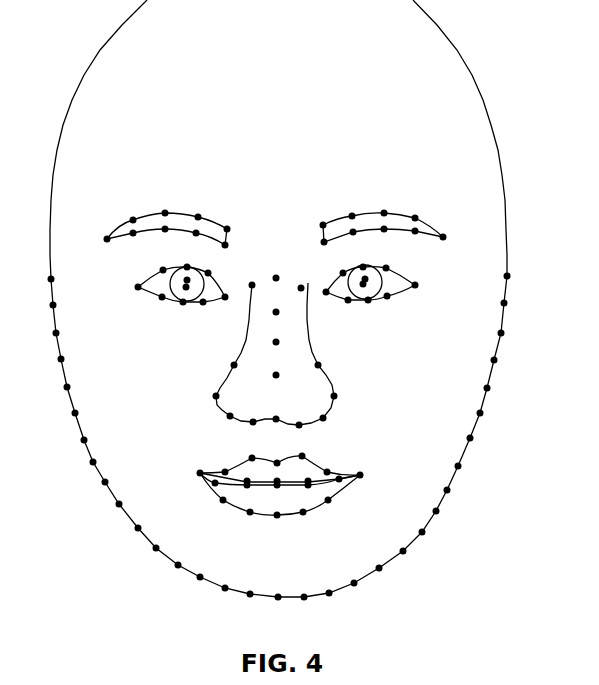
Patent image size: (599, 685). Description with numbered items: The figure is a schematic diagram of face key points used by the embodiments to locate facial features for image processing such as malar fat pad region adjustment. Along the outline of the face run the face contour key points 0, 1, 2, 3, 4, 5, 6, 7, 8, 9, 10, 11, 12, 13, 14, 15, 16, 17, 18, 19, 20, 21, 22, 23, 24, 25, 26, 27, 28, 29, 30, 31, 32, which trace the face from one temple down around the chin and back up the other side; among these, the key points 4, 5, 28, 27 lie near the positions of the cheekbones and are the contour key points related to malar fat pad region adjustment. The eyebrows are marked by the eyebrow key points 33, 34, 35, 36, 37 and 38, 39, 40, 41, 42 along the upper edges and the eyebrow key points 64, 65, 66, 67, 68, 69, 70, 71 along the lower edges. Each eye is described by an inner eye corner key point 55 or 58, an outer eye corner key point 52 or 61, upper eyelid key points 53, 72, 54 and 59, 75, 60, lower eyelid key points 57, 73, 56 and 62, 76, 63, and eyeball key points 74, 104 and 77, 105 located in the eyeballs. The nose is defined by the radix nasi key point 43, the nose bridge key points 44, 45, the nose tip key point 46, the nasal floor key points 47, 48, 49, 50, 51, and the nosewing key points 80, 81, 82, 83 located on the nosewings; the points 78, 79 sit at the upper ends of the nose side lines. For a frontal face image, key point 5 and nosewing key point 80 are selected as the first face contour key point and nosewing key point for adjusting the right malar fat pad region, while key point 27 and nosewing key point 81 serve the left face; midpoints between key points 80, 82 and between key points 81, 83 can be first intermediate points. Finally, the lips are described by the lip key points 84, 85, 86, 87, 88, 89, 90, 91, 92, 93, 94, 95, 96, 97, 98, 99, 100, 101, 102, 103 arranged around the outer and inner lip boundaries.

The face contour key point 0 is at (47, 288).
The face contour key point 1 is at (50, 314).
The face contour key point 2 is at (54, 343).
The face contour key point 3 is at (59, 369).
The face contour key point 4 is at (65, 396).
The face contour key point 5 is at (73, 423).
The face contour key point 6 is at (82, 449).
The face contour key point 7 is at (90, 470).
The face contour key point 8 is at (103, 491).
The face contour key point 9 is at (117, 513).
The face contour key point 10 is at (133, 537).
The face contour key point 11 is at (152, 557).
The face contour key point 12 is at (175, 574).
The face contour key point 13 is at (197, 586).
The face contour key point 14 is at (223, 597).
The face contour key point 15 is at (247, 602).
The face contour key point 16 is at (275, 605).
The face contour key point 17 is at (302, 605).
The face contour key point 18 is at (327, 601).
The face contour key point 19 is at (353, 591).
The face contour key point 20 is at (379, 576).
The face contour key point 21 is at (402, 560).
The face contour key point 22 is at (422, 541).
The face contour key point 23 is at (437, 520).
The face contour key point 24 is at (452, 499).
The face contour key point 25 is at (463, 474).
The face contour key point 26 is at (476, 447).
The face contour key point 27 is at (486, 423).
The face contour key point 28 is at (495, 399).
The face contour key point 29 is at (501, 370).
The face contour key point 30 is at (508, 341).
The face contour key point 31 is at (512, 311).
The face contour key point 32 is at (514, 284).
The eyebrow key point 33 is at (103, 233).
The eyebrow key point 34 is at (133, 212).
The eyebrow key point 35 is at (164, 207).
The eyebrow key point 36 is at (198, 211).
The eyebrow key point 37 is at (226, 222).
The eyebrow key point 38 is at (323, 219).
The eyebrow key point 39 is at (352, 209).
The eyebrow key point 40 is at (385, 206).
The eyebrow key point 41 is at (413, 213).
The eyebrow key point 42 is at (447, 230).
The radix nasi key point 43 is at (276, 286).
The nose bridge key point 44 is at (276, 319).
The nose bridge key point 45 is at (276, 349).
The nose tip key point 46 is at (276, 384).
The nasal floor key point 47 is at (226, 424).
The nasal floor key point 48 is at (252, 430).
The nasal floor key point 49 is at (275, 426).
The nasal floor key point 50 is at (298, 433).
The nasal floor key point 51 is at (326, 426).
The outer eye corner key point 52 is at (142, 295).
The upper eyelid key point 53 is at (163, 263).
The upper eyelid key point 54 is at (213, 267).
The inner eye corner key point 55 is at (225, 305).
The lower eyelid key point 56 is at (203, 309).
The lower eyelid key point 57 is at (160, 305).
The inner eye corner key point 58 is at (325, 301).
The upper eyelid key point 59 is at (340, 267).
The upper eyelid key point 60 is at (387, 262).
The outer eye corner key point 61 is at (415, 293).
The lower eyelid key point 62 is at (387, 304).
The lower eyelid key point 63 is at (347, 309).
The eyebrow key point 64 is at (134, 241).
The eyebrow key point 65 is at (165, 237).
The eyebrow key point 66 is at (196, 243).
The eyebrow key point 67 is at (223, 252).
The eyebrow key point 68 is at (323, 249).
The eyebrow key point 69 is at (353, 240).
The eyebrow key point 70 is at (384, 237).
The eyebrow key point 71 is at (413, 238).
The upper eyelid key point 72 is at (183, 261).
The lower eyelid key point 73 is at (183, 310).
The eyeball key point 74 is at (174, 286).
The upper eyelid key point 75 is at (363, 260).
The lower eyelid key point 76 is at (367, 309).
The eyeball key point 77 is at (358, 285).
The left nose wing landmark 78 is at (246, 294).
The right nose wing landmark 79 is at (298, 296).
The nosewing key point 80 is at (237, 374).
The nosewing key point 81 is at (316, 374).
The nosewing key point 82 is at (210, 404).
The nosewing key point 83 is at (342, 403).
The lip key point 84 is at (195, 468).
The lip key point 85 is at (225, 465).
The lip key point 86 is at (250, 452).
The lip key point 87 is at (277, 457).
The lip key point 88 is at (302, 450).
The lip key point 89 is at (327, 465).
The lip key point 90 is at (367, 478).
The lip key point 91 is at (328, 508).
The lip key point 92 is at (303, 519).
The lip key point 93 is at (277, 522).
The lip key point 94 is at (250, 519).
The lip key point 95 is at (223, 508).
The lip key point 96 is at (222, 489).
The lip key point 97 is at (245, 475).
The lip key point 98 is at (277, 475).
The lip key point 99 is at (308, 475).
The lip key point 100 is at (329, 487).
The lip key point 101 is at (307, 492).
The lip key point 102 is at (277, 492).
The lip key point 103 is at (248, 492).
The eyeball key point 104 is at (204, 289).
The eyeball key point 105 is at (380, 282).